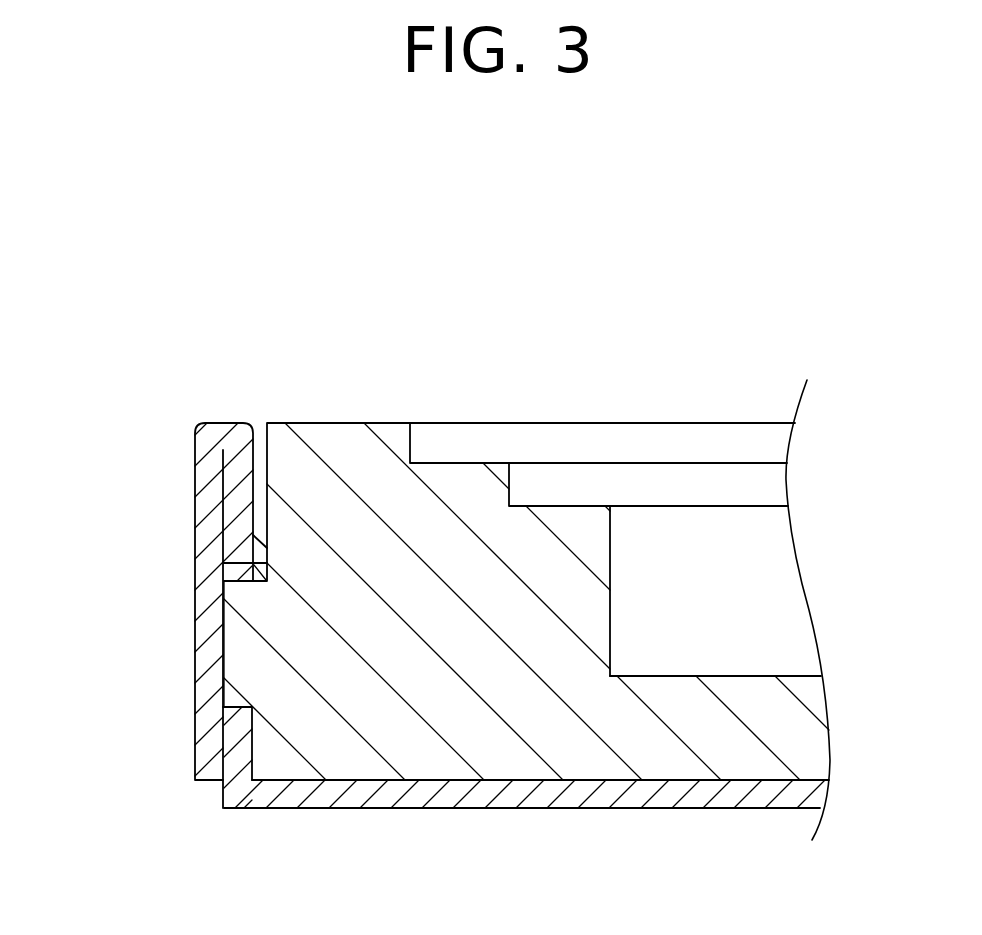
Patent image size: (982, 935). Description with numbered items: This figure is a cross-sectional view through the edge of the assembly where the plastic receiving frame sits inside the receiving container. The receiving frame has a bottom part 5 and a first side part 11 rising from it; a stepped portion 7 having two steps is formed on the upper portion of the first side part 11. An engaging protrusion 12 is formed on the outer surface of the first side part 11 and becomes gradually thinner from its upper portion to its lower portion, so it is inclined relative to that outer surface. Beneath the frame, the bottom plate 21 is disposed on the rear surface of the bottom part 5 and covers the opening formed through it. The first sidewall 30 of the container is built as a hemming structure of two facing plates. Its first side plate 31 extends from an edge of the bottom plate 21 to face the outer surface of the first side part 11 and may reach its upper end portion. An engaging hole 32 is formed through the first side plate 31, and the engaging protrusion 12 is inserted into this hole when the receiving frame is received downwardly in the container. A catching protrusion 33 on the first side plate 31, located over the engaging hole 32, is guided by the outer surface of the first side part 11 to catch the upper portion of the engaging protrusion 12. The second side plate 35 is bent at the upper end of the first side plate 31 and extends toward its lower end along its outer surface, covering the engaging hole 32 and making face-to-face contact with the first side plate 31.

The bottom part 5 is at (735, 737).
The stepped portion 7 is at (553, 506).
The first side part 11 is at (424, 582).
The engaging protrusion 12 is at (237, 617).
The bottom plate 21 is at (603, 797).
The first sidewall 30 is at (135, 615).
The first side plate 31 is at (240, 748).
The engaging hole 32 is at (240, 566).
The catching protrusion 33 is at (262, 558).
The second side plate 35 is at (203, 676).